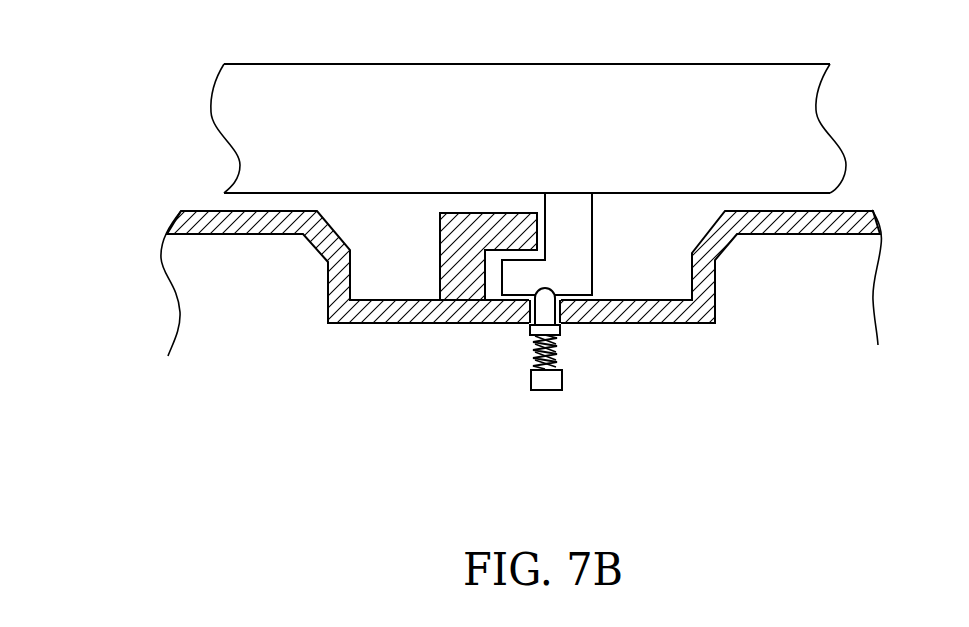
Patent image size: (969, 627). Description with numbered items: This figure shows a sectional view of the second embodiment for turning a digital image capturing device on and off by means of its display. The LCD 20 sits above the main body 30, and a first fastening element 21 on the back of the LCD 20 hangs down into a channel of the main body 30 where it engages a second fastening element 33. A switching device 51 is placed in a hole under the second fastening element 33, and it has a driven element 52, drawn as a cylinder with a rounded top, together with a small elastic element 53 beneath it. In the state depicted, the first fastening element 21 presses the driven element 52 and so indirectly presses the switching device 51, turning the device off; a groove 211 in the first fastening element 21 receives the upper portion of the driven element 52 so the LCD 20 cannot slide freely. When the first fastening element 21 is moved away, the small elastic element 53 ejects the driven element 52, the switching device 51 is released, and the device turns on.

The LCD 20 is at (222, 125).
The first fastening element 21 is at (582, 290).
The groove 211 is at (545, 289).
The main body 30 is at (193, 313).
The second fastening element 33 is at (443, 253).
The switching device 51 is at (552, 382).
The driven element 52 is at (543, 316).
The small elastic element 53 is at (532, 357).